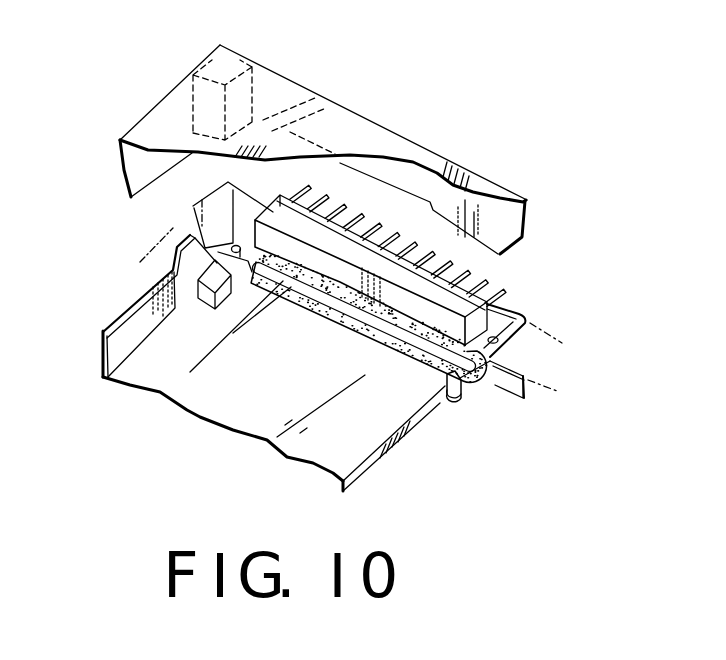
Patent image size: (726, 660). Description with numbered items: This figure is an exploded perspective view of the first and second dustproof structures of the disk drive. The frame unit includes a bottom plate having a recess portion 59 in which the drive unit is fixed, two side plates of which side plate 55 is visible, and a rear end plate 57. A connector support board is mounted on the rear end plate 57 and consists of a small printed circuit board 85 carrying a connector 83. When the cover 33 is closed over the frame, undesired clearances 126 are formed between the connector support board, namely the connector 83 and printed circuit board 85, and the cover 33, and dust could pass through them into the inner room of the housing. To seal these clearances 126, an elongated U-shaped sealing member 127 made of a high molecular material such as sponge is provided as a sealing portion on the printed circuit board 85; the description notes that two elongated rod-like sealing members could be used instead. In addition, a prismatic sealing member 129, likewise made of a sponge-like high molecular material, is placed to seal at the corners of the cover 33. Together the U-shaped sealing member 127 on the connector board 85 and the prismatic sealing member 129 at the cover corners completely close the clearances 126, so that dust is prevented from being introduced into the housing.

The cover 33 is at (320, 101).
The prismatic sealing member 129 is at (258, 80).
The side plate 55 is at (141, 291).
The recess portion 59 is at (320, 391).
The clearances 126 is at (205, 227).
The connector 83 is at (500, 279).
The small printed circuit board 85 is at (526, 316).
The rear end plate 57 is at (375, 354).
The tab 127 is at (478, 388).